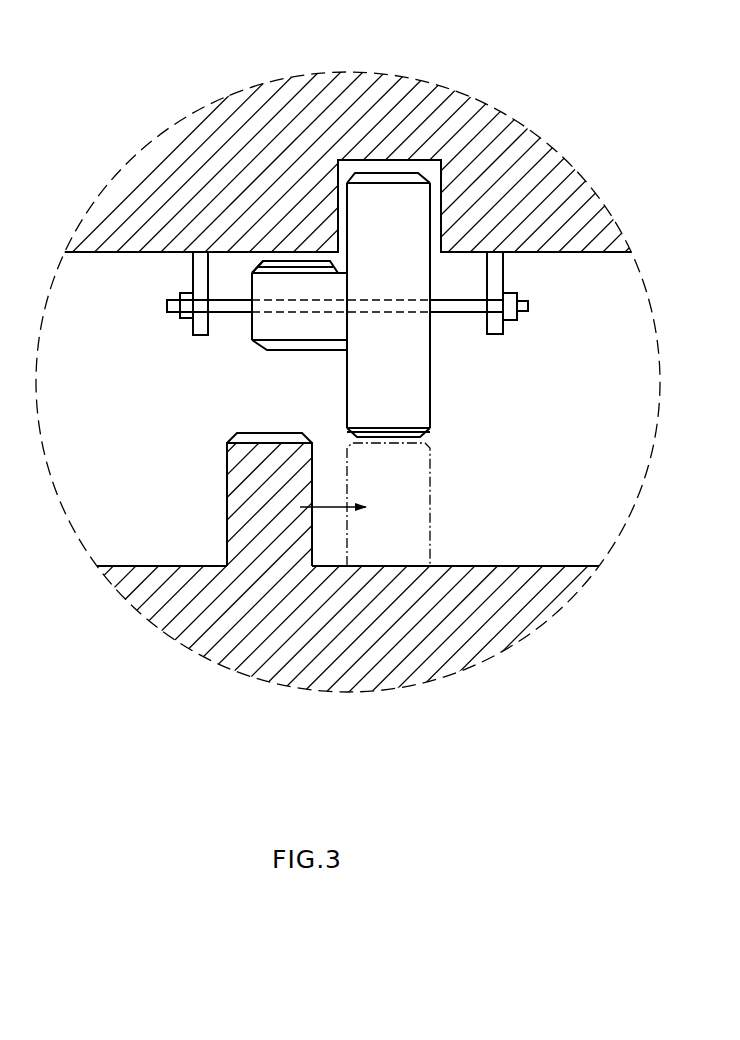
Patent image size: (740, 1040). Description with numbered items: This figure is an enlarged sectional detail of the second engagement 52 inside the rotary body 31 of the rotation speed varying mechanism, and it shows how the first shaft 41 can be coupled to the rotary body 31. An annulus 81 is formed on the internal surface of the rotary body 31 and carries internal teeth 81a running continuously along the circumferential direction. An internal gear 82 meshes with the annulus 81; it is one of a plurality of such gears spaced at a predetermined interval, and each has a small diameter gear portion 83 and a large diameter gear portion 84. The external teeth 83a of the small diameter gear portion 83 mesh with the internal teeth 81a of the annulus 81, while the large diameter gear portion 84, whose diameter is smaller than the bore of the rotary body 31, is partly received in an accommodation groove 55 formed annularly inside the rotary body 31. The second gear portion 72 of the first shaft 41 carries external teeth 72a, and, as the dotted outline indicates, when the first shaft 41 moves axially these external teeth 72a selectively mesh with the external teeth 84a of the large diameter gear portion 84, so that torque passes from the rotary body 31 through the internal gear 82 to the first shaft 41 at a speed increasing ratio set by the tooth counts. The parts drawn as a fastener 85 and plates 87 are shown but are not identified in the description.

The rotary body 31 is at (108, 202).
The first shaft 41 is at (152, 580).
The second engagement 52 is at (205, 394).
The accommodation groove 55 is at (403, 157).
The second gear portion 72 is at (236, 492).
The external teeth of the second gear portion 72a is at (231, 437).
The annulus 81 is at (290, 252).
The internal teeth of the annulus 81a is at (263, 258).
The internal gear 82 is at (443, 368).
The small diameter gear portion 83 is at (258, 329).
The external teeth of the small diameter gear portion 83a is at (293, 345).
The large diameter gear portion 84 is at (420, 400).
The external teeth of the large diameter gear portion 84a is at (432, 433).
The bolt 85 is at (230, 307).
The support plate 87 is at (195, 325).